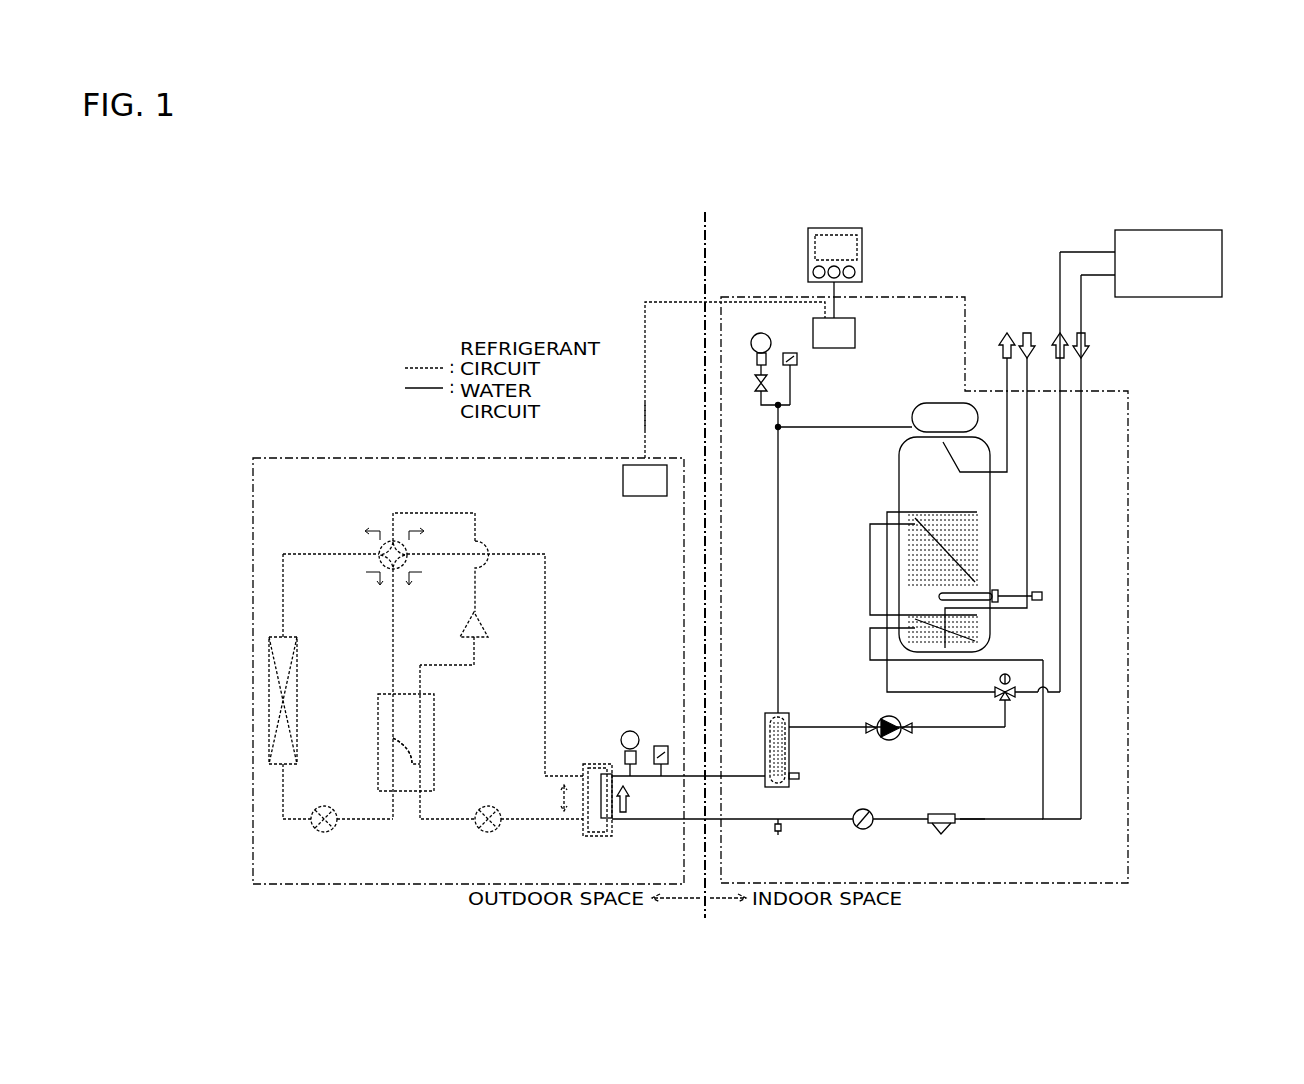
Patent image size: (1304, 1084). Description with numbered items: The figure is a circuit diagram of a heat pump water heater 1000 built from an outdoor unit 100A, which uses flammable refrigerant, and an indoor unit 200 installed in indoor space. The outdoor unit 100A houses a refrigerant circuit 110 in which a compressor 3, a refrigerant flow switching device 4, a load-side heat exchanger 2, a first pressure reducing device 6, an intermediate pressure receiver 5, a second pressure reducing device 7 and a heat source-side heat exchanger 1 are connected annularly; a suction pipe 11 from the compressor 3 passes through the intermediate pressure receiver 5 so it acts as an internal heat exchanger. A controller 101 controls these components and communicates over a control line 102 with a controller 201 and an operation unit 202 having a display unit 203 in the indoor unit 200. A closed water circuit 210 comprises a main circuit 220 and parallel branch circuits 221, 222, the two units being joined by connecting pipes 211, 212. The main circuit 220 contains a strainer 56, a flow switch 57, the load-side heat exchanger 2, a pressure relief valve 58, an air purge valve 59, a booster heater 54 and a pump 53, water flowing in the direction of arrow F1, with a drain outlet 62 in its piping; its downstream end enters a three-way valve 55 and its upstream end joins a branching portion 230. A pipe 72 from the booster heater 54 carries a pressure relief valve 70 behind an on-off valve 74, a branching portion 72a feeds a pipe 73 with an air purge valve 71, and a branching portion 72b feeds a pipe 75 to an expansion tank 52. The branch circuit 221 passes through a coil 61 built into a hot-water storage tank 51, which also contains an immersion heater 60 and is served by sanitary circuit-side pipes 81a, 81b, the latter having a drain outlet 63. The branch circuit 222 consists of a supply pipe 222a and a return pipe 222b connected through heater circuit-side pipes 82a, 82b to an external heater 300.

The heat source-side heat exchanger 1 is at (299, 668).
The load-side heat exchanger 2 is at (583, 830).
The compressor 3 is at (480, 628).
The refrigerant flow switching device 4 is at (390, 541).
The intermediate pressure receiver 5 is at (435, 730).
The first pressure reducing device 6 is at (478, 828).
The second pressure reducing device 7 is at (315, 827).
The suction pipe 11 is at (395, 745).
The hot-water storage tank 51 is at (899, 490).
The expansion tank 52 is at (935, 403).
The pump 53 is at (880, 717).
The booster heater 54 is at (768, 712).
The three-way valve 55 is at (995, 690).
The strainer 56 is at (940, 834).
The flow switch 57 is at (862, 829).
The pressure relief valve 58 is at (622, 735).
The air purge valve 59 is at (660, 746).
The immersion heater 60 is at (1033, 573).
The coil 61 is at (978, 512).
The drain outlet 62 is at (778, 835).
The drain outlet 63 is at (1044, 598).
The pressure relief valve 70 is at (752, 338).
The air purge valve 71 is at (787, 352).
The pipe 72 is at (780, 500).
The branching portion 72a is at (776, 407).
The branching portion 72b is at (776, 429).
The pipe 73 is at (792, 393).
The on-off valve 74 is at (790, 380).
The pipe 75 is at (872, 425).
The sanitary circuit-side pipe 81a is at (1005, 330).
The sanitary circuit-side pipe 81b is at (1027, 330).
The heater circuit-side pipe 82a is at (1060, 330).
The heater circuit-side pipe 82b is at (1083, 332).
The outdoor unit 100A is at (310, 458).
The controller 101 is at (623, 478).
The control line 102 is at (645, 403).
The refrigerant circuit 110 is at (546, 640).
The indoor unit 200 is at (900, 297).
The controller 201 is at (855, 333).
The operation unit 202 is at (862, 233).
The display unit 203 is at (812, 243).
The water circuit 210 is at (1003, 821).
The connecting pipe 211 is at (712, 819).
The connecting pipe 212 is at (712, 775).
The main circuit 220 is at (972, 821).
The branch circuit 221 is at (886, 680).
The branch circuit 222 is at (1062, 672).
The supply pipe 222a is at (1062, 422).
The return pipe 222b is at (1083, 448).
The branching portion 230 is at (1045, 821).
The heater 300 is at (1168, 297).
The heat pump water heater 1000 is at (611, 345).
The arrow F1 is at (630, 812).